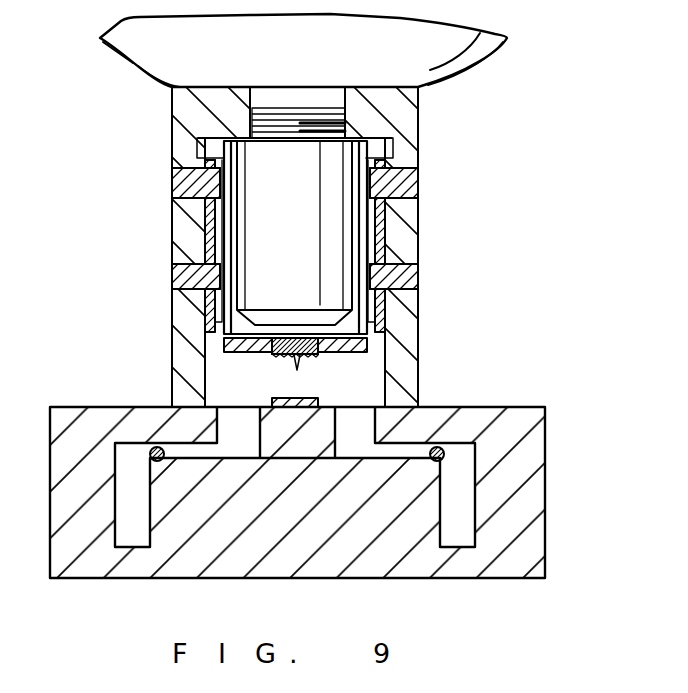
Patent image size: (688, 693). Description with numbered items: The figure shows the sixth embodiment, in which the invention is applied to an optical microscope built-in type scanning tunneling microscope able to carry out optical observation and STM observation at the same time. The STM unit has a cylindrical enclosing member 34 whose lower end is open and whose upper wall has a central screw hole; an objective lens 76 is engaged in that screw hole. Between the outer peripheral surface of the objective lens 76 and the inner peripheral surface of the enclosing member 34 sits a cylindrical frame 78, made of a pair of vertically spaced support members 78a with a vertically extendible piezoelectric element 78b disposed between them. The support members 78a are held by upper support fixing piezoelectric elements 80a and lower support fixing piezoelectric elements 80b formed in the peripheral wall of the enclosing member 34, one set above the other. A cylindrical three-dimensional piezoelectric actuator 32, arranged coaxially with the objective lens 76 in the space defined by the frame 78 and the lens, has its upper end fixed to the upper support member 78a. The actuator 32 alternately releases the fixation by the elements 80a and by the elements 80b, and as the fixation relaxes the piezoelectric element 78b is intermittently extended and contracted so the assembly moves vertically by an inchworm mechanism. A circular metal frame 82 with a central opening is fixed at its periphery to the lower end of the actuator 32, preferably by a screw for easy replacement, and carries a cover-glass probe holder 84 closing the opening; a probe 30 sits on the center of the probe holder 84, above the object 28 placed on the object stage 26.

The object stage 26 is at (372, 407).
The object 28 is at (273, 402).
The probe 30 is at (301, 370).
The cylindrical three-dimensional piezoelectric actuator 32 is at (213, 243).
The cylindrical enclosing member 34 is at (422, 123).
The objective lens 76 is at (253, 153).
The cylindrical frame 78 is at (200, 337).
The support members 78a is at (390, 160).
The vertically extendible piezoelectric element 78b is at (380, 247).
The upper support fixing piezoelectric elements 80a is at (418, 182).
The lower support fixing piezoelectric elements 80b is at (418, 281).
The circular metal frame 82 is at (365, 356).
The probe holder 84 is at (270, 360).